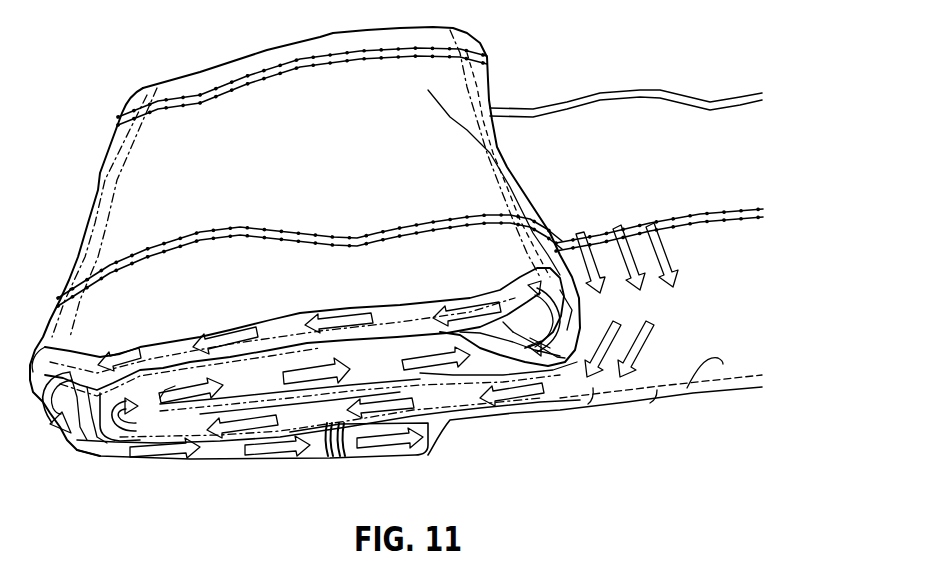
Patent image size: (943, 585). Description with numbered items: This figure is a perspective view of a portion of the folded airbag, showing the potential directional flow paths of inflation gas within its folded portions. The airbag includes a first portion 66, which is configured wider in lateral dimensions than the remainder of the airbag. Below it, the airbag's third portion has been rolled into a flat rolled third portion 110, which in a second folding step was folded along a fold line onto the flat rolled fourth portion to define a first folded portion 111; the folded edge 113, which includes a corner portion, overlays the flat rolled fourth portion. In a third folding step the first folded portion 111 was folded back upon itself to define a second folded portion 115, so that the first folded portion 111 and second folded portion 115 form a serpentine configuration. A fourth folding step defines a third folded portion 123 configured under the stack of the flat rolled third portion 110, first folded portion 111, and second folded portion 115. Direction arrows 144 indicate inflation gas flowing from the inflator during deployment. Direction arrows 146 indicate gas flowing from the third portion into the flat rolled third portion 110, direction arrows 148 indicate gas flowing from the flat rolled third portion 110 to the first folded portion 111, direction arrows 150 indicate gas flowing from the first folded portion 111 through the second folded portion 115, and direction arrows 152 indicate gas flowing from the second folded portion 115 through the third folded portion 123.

The first portion 66 is at (612, 107).
The flat rolled third portion 110 is at (278, 424).
The first folded portion 111 is at (507, 355).
The folded edge 113 is at (440, 437).
The second folded portion 115 is at (118, 202).
The third folded portion 123 is at (322, 446).
The direction arrows 144 is at (667, 267).
The direction arrows 146 is at (231, 422).
The direction arrows 148 is at (174, 390).
The direction arrows 150 is at (341, 325).
The direction arrows 152 is at (376, 445).